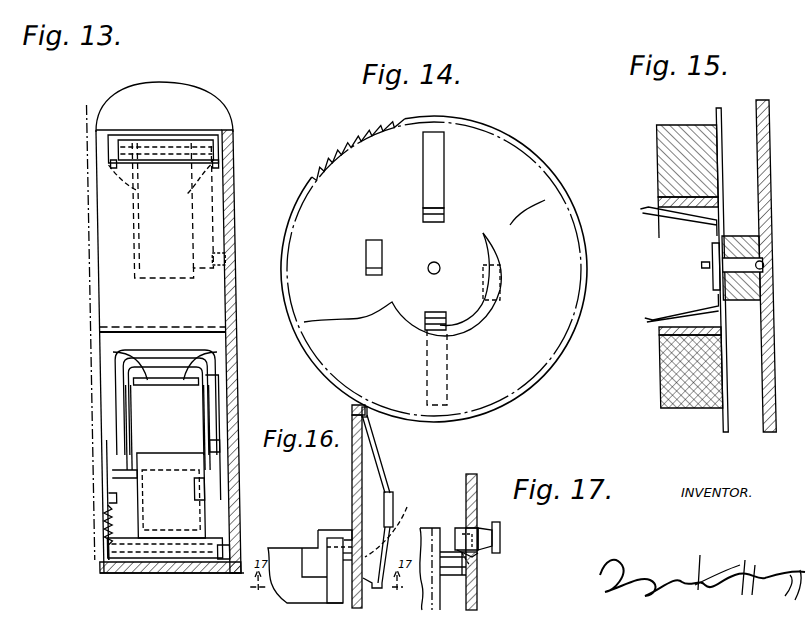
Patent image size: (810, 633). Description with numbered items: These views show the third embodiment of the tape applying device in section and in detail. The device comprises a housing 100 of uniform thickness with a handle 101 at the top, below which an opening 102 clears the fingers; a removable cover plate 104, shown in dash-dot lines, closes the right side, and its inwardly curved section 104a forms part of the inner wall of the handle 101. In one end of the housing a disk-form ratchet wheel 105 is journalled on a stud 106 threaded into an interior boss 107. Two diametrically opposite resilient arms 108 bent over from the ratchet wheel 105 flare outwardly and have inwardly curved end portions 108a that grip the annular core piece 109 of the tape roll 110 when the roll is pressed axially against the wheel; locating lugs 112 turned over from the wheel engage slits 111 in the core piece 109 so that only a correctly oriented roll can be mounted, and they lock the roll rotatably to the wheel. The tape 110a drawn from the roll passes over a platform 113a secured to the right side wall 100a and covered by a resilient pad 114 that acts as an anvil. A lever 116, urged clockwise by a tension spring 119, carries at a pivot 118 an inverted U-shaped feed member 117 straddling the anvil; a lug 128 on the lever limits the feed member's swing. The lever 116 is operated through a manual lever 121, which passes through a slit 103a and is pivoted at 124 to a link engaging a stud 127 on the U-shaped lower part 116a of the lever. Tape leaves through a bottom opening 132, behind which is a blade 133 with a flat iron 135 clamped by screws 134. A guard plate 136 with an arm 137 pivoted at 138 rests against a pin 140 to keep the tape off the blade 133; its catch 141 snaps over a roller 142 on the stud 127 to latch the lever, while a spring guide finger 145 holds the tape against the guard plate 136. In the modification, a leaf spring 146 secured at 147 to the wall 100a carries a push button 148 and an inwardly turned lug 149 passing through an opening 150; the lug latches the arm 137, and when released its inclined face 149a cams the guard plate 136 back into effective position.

In FIG. 13, the housing 100 is at (245, 160).
In FIG. 13, the right side wall 100a is at (233, 214).
In FIG. 15, the right side wall 100a is at (756, 228).
In FIG. 16, the right side wall 100a is at (352, 490).
In FIG. 17, the right side wall 100a is at (472, 474).
In FIG. 13, the handle 101 is at (206, 97).
In FIG. 13, the opening 102 is at (132, 325).
In FIG. 13, the slit 103a is at (160, 210).
In FIG. 13, the removable cover plate 104 is at (86, 248).
In FIG. 13, the inwardly curved section 104a is at (128, 165).
In FIG. 14, the ratchet wheel 105 is at (506, 132).
In FIG. 15, the ratchet wheel 105 is at (712, 112).
In FIG. 15, the stud 106 is at (709, 288).
In FIG. 15, the interior boss 107 is at (756, 236).
In FIG. 14, the arms 108 is at (447, 220).
In FIG. 15, the arms 108 is at (668, 220).
In FIG. 15, the inwardly curved end portions 108a is at (643, 210).
In FIG. 15, the annular core piece 109 is at (654, 332).
In FIG. 14, the tape roll 110 is at (540, 378).
In FIG. 13, the tape 110a is at (126, 345).
In FIG. 15, the slits 111 is at (698, 264).
In FIG. 14, the locating lugs 112 is at (366, 270).
In FIG. 15, the locating lugs 112 is at (698, 268).
In FIG. 13, the platform 113a is at (201, 373).
In FIG. 13, the resilient pad 114 is at (131, 380).
In FIG. 13, the lever 116 is at (104, 443).
In FIG. 13, the U-shaped lower part 116a is at (152, 545).
In FIG. 13, the feed member 117 is at (222, 345).
In FIG. 13, the pivot 118 is at (118, 400).
In FIG. 13, the tension spring 119 is at (98, 527).
In FIG. 13, the manual lever 121 is at (150, 278).
In FIG. 13, the pivot 124 is at (224, 258).
In FIG. 13, the stud 127 is at (226, 522).
In FIG. 13, the lug 128 is at (130, 445).
In FIG. 14, the bottom opening 132 is at (245, 22).
In FIG. 14, the blade 133 is at (425, 2).
In FIG. 14, the screws 134 is at (368, 13).
In FIG. 14, the flat iron 135 is at (400, 0).
In FIG. 13, the guard plate 136 is at (129, 480).
In FIG. 16, the guard plate 136 is at (295, 575).
In FIG. 17, the guard plate 136 is at (432, 571).
In FIG. 13, the arm 137 is at (222, 480).
In FIG. 16, the arm 137 is at (338, 577).
In FIG. 17, the arm 137 is at (479, 583).
In FIG. 13, the pivot 138 is at (228, 442).
In FIG. 13, the pin 140 is at (254, 496).
In FIG. 13, the catch 141 is at (165, 507).
In FIG. 13, the roller 142 is at (182, 545).
In FIG. 13, the spring guide finger 145 is at (181, 478).
In FIG. 16, the leaf spring 146 is at (381, 565).
In FIG. 16, the securing point 147 is at (368, 418).
In FIG. 16, the push button 148 is at (394, 494).
In FIG. 17, the push button 148 is at (501, 540).
In FIG. 16, the lug 149 is at (375, 588).
In FIG. 17, the lug 149 is at (464, 528).
In FIG. 17, the inclined face 149a is at (485, 528).
In FIG. 16, the opening 150 is at (399, 520).
In FIG. 17, the opening 150 is at (480, 553).